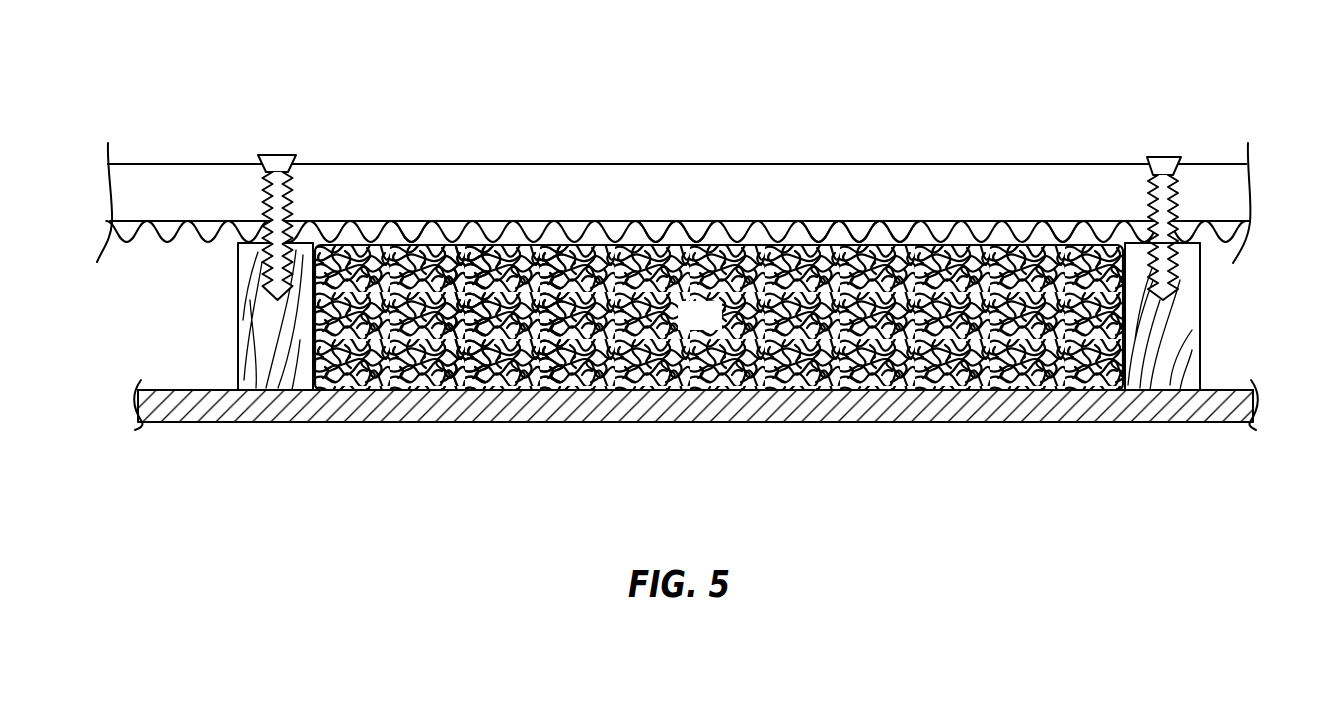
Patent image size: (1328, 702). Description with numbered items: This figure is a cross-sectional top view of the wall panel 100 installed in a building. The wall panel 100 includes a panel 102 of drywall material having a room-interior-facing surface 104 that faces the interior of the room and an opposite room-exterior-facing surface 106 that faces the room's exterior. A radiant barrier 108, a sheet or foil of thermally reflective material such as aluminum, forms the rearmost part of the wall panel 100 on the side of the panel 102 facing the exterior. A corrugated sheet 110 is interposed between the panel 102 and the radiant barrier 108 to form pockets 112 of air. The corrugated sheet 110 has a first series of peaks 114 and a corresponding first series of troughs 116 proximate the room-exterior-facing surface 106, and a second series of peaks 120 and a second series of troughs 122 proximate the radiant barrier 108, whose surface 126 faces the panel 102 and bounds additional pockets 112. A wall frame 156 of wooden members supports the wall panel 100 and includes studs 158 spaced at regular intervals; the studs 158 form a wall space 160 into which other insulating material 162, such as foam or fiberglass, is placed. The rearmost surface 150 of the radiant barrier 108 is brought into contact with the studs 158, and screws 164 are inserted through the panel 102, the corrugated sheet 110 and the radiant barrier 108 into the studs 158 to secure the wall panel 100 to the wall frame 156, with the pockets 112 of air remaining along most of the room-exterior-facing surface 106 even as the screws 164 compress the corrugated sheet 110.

The wall panel 100 is at (345, 111).
The panel of drywall material 102 is at (137, 190).
The room-interior-facing surface 104 is at (198, 164).
The room-exterior-facing surface 106 is at (128, 222).
The radiant barrier 108 is at (357, 250).
The corrugated sheet 110 is at (411, 228).
The pockets of air 112 is at (697, 234).
The first series of peaks 114 is at (838, 222).
The first series of troughs 116 is at (899, 242).
The second series of peaks 120 is at (481, 247).
The second series of troughs 122 is at (556, 247).
The surface of the radiant barrier 126 is at (1062, 240).
The rearmost surface 150 is at (1183, 248).
The wall frame 156 is at (812, 405).
The studs 158 is at (258, 333).
The wall space 160 is at (966, 391).
The insulating material 162 is at (719, 327).
The screws 164 is at (272, 160).